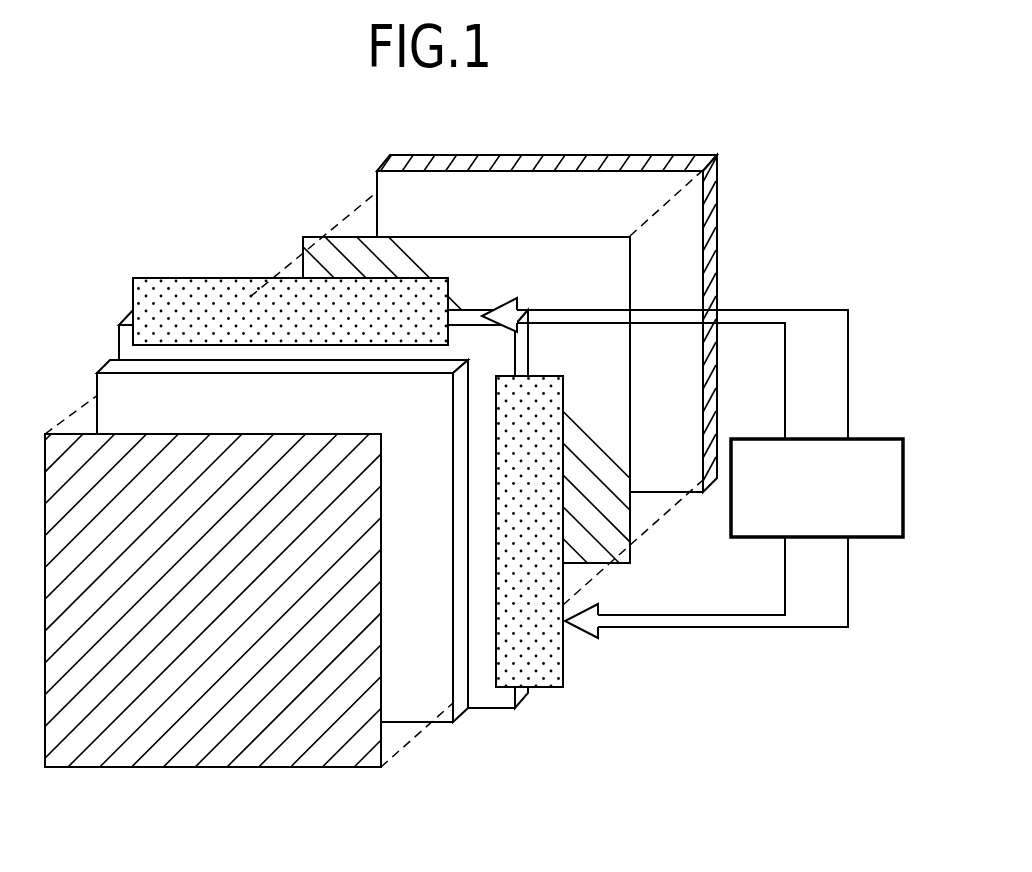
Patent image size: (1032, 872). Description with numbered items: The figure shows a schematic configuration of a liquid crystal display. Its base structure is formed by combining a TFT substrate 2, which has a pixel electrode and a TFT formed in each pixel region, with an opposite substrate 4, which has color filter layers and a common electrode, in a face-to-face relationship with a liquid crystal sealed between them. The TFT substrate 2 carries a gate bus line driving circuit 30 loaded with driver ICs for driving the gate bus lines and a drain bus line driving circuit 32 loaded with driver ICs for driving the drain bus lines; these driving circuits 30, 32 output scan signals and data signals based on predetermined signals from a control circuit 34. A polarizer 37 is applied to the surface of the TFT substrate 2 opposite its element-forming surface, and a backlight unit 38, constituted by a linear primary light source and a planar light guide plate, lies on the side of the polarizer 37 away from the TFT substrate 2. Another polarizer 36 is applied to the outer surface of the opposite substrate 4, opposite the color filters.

The TFT substrate 2 is at (495, 700).
The opposite substrate 4 is at (442, 720).
The gate bus line driving circuit 30 is at (560, 663).
The drain bus line driving circuit 32 is at (170, 292).
The control circuit 34 is at (875, 438).
The polarizer 36 is at (165, 768).
The polarizer 37 is at (623, 530).
The backlight unit 38 is at (717, 200).